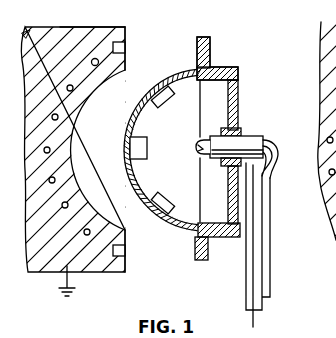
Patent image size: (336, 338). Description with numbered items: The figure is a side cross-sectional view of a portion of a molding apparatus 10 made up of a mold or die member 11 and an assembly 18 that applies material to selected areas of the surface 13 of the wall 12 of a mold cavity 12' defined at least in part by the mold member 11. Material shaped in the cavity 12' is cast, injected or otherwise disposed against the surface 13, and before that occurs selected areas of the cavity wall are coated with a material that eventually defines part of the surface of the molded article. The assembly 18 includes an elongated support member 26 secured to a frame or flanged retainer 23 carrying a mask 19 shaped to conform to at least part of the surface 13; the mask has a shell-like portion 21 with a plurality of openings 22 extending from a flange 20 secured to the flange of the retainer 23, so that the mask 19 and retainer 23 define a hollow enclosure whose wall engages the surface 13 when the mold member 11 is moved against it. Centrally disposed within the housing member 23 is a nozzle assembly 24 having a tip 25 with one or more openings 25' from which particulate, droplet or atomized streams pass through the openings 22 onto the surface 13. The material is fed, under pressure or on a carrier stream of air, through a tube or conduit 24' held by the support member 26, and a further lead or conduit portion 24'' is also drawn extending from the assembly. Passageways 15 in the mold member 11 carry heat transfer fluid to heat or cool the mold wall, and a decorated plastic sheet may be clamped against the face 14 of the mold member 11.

The apparatus 10 is at (233, 33).
The mold member 11 is at (60, 43).
The wall 12 is at (103, 13).
The mold cavity 12' is at (136, 149).
The surface 13 is at (73, 129).
The face 14 is at (126, 45).
The passageways 15 is at (94, 58).
The assembly 18 is at (237, 73).
The mask 19 is at (188, 236).
The flange 20 is at (198, 40).
The shell-like portion 21 is at (187, 73).
The openings 22 is at (160, 206).
The flanged retainer 23 is at (238, 101).
The nozzle assembly 24 is at (247, 139).
The tube or conduit 24' is at (284, 163).
The lead wire ends 24'' is at (284, 245).
The tip 25 is at (189, 138).
The openings 25' is at (180, 166).
The elongated support member 26 is at (253, 232).